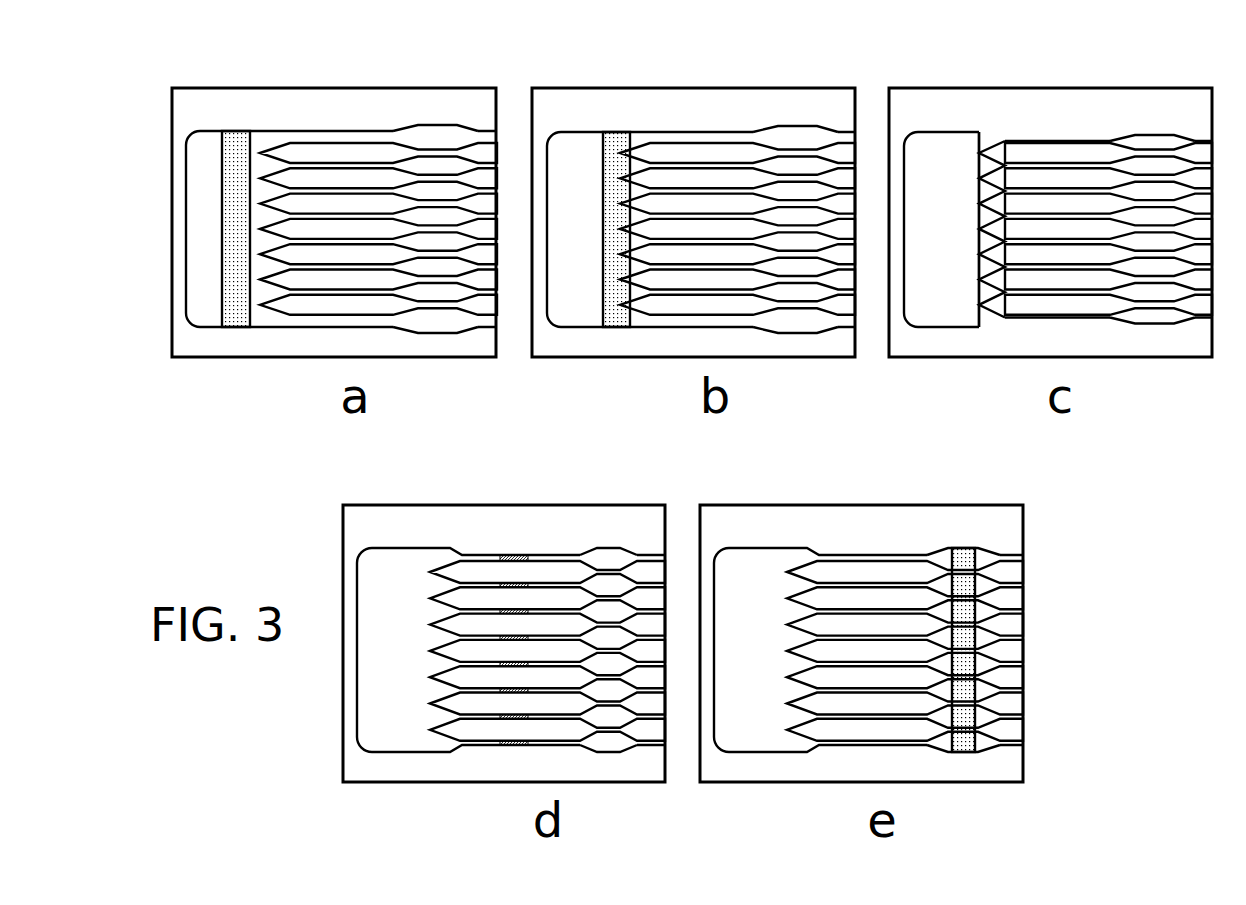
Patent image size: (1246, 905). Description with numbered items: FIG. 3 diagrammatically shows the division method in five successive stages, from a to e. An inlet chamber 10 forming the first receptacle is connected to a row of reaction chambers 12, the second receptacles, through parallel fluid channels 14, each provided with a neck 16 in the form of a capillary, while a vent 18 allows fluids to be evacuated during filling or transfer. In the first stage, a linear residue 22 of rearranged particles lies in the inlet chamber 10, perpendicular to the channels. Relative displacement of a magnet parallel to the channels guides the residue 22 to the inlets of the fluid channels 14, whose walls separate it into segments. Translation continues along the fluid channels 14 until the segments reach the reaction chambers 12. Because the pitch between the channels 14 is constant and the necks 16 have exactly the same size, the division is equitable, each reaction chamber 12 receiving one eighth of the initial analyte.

The inlet chamber 10 is at (205, 143).
The reaction chambers 12 is at (432, 140).
The fluid channels 14 is at (345, 145).
The neck 16 is at (287, 138).
The vent 18 is at (491, 140).
The residue 22 is at (236, 325).